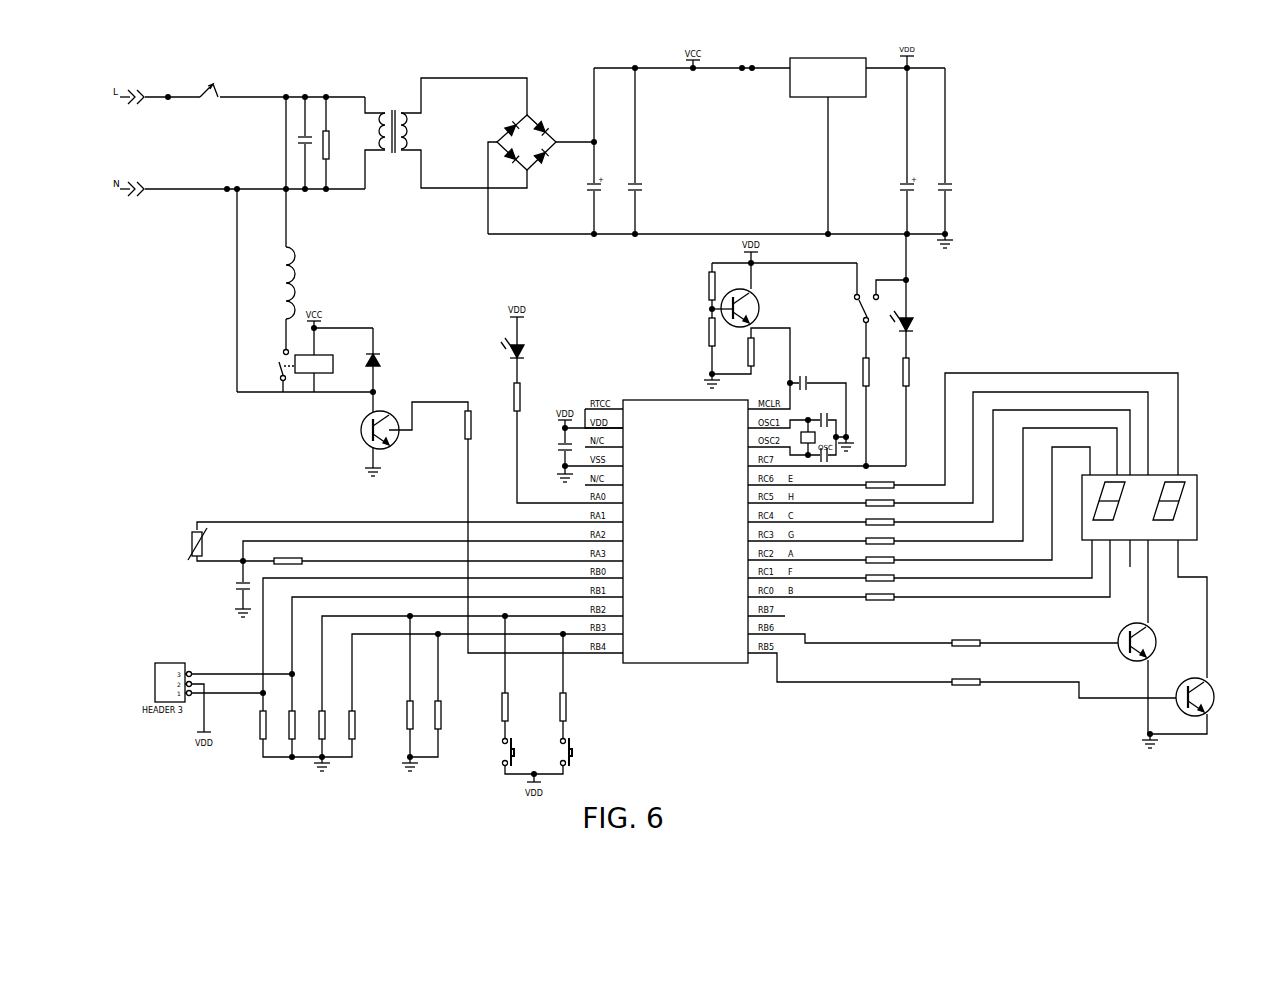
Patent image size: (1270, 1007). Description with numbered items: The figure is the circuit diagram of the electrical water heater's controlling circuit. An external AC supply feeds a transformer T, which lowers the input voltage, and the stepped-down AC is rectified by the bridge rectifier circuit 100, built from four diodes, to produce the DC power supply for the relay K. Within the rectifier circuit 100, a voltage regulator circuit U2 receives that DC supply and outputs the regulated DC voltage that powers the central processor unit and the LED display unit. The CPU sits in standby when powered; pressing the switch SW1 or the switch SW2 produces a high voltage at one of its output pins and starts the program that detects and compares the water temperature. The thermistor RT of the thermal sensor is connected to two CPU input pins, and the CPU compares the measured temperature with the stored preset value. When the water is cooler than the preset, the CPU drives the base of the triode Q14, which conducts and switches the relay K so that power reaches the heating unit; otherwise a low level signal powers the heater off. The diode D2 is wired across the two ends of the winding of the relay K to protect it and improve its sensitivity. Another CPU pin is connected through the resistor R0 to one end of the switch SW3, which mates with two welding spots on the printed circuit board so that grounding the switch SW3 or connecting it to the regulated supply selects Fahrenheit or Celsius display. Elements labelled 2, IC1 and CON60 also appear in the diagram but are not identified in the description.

The bridge rectifier circuit 100 is at (482, 76).
The coil 2 is at (287, 241).
The transformer T is at (386, 143).
The voltage regulator circuit U2 is at (828, 77).
The relay K is at (306, 368).
The diode D2 is at (380, 356).
The triode Q14 is at (385, 426).
The microcontroller PIC57 IC1 is at (685, 534).
The switch SW3 is at (852, 293).
The resistor R0 is at (858, 394).
The display connector CON60 is at (1154, 508).
The thermistor RT is at (202, 544).
The switch SW1 is at (575, 752).
The switch SW2 is at (517, 752).